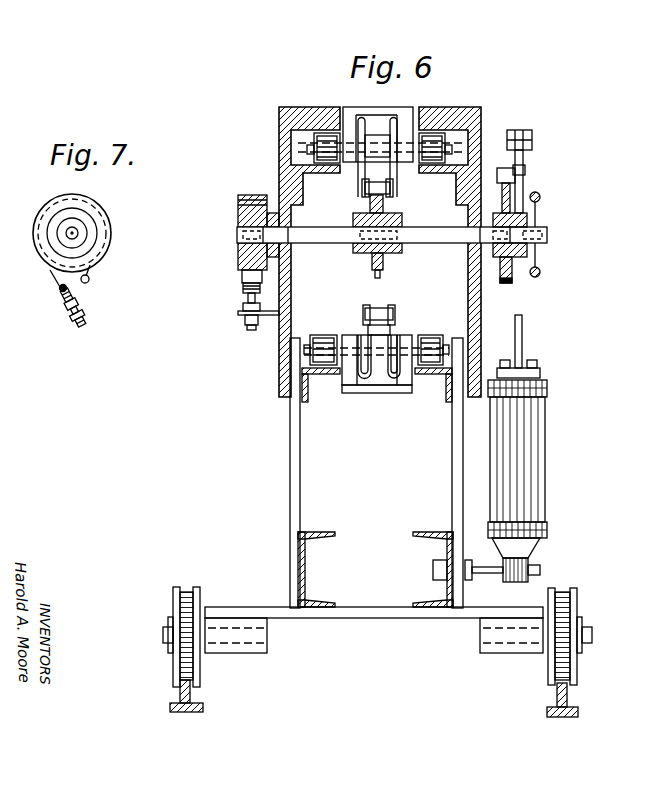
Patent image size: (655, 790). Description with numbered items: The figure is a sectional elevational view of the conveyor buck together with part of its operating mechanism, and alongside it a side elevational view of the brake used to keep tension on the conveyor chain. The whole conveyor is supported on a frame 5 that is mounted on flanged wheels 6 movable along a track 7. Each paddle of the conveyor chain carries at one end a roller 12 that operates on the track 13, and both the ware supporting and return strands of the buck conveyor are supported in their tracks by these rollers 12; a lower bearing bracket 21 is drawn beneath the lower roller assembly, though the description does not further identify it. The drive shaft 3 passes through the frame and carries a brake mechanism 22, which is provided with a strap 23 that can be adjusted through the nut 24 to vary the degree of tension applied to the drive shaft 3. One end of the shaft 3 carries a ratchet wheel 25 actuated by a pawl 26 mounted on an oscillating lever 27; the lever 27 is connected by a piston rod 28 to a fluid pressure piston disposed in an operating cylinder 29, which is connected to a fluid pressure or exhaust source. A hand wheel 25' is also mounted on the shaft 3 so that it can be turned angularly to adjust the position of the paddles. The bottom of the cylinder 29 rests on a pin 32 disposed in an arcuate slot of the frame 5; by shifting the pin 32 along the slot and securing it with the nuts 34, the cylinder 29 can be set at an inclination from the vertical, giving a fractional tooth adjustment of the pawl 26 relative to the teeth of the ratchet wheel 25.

In FIG. 6, the drive shaft 3 is at (341, 243).
In FIG. 6, the frame 5 is at (320, 618).
In FIG. 6, the flanged wheels 6 is at (578, 605).
In FIG. 6, the track 7 is at (578, 700).
In FIG. 6, the roller 12 is at (437, 335).
In FIG. 6, the track 13 is at (425, 173).
In FIG. 6, the lower bearing bracket 21 is at (443, 375).
In FIG. 6, the brake mechanism 22 is at (238, 205).
In FIG. 7, the brake mechanism 22 is at (97, 248).
In FIG. 7, the strap 23 is at (55, 277).
In FIG. 7, the nut 24 is at (85, 303).
In FIG. 6, the ratchet wheel 25 is at (544, 271).
In FIG. 6, the hand wheel 25' is at (561, 209).
In FIG. 6, the pawl 26 is at (503, 168).
In FIG. 6, the oscillating lever 27 is at (525, 163).
In FIG. 6, the piston rod 28 is at (523, 338).
In FIG. 6, the operating cylinder 29 is at (545, 457).
In FIG. 6, the pin 32 is at (485, 566).
In FIG. 6, the nuts 34 is at (440, 560).